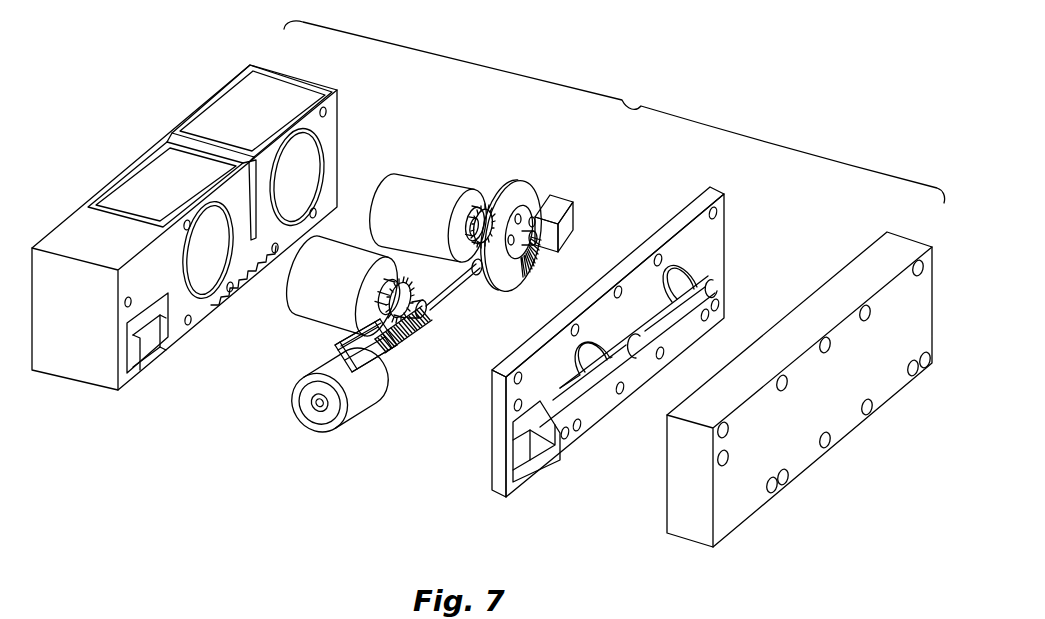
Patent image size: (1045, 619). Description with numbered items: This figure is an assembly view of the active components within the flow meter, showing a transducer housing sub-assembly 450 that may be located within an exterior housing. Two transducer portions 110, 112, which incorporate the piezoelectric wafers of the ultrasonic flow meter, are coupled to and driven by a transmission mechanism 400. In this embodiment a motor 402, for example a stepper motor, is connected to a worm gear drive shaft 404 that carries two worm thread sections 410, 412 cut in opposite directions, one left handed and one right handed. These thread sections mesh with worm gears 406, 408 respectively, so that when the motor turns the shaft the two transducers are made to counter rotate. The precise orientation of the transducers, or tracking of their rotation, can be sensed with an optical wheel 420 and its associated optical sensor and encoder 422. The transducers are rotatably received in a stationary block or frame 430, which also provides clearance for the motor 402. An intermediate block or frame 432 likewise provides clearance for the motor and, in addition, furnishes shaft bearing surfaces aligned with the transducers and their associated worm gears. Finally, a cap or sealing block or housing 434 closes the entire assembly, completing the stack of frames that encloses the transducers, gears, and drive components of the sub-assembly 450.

The transducer portion 110 is at (417, 180).
The transducer portion 112 is at (345, 253).
The transmission mechanism 400 is at (295, 437).
The motor 402 is at (358, 406).
The worm gear drive shaft 404 is at (443, 305).
The worm gear 406 is at (487, 203).
The worm gear 408 is at (378, 300).
The worm thread section 410 is at (476, 280).
The worm thread section 412 is at (400, 353).
The optical wheel 420 is at (530, 193).
The optical sensor and encoder 422 is at (563, 217).
The stationary block or frame 430 is at (82, 353).
The intermediate block or frame 432 is at (500, 463).
The cap or sealing block or housing 434 is at (693, 515).
The sub-assembly 450 is at (614, 112).